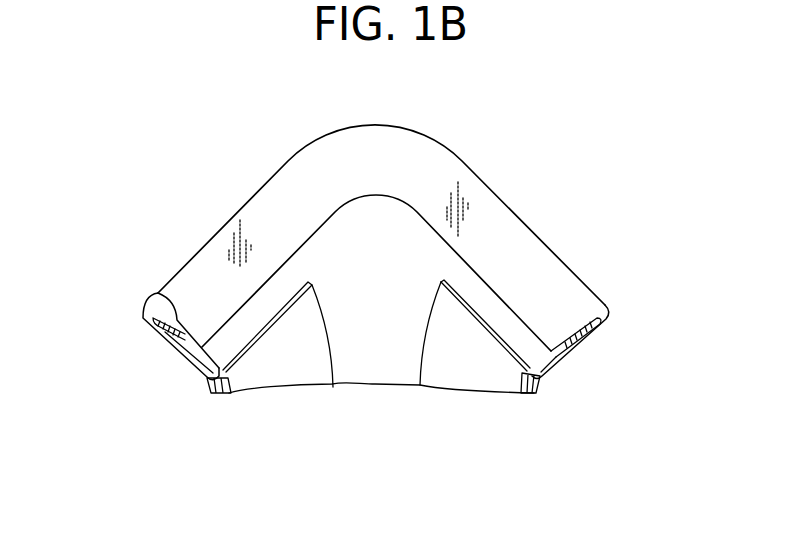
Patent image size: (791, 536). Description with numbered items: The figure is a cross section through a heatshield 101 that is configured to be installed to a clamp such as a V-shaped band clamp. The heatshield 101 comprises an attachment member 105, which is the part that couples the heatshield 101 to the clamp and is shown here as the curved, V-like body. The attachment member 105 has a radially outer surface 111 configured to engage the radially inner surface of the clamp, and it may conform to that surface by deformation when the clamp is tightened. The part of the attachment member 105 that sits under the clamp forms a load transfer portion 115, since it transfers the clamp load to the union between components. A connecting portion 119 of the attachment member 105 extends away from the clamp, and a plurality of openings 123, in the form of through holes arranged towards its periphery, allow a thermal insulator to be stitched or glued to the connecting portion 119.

The heatshield 101 is at (168, 181).
The attachment member 105 is at (503, 340).
The radially outer surface 111 is at (467, 303).
The load transfer portion 115 is at (438, 375).
The connecting portion 119 is at (550, 360).
The openings 123 is at (158, 294).